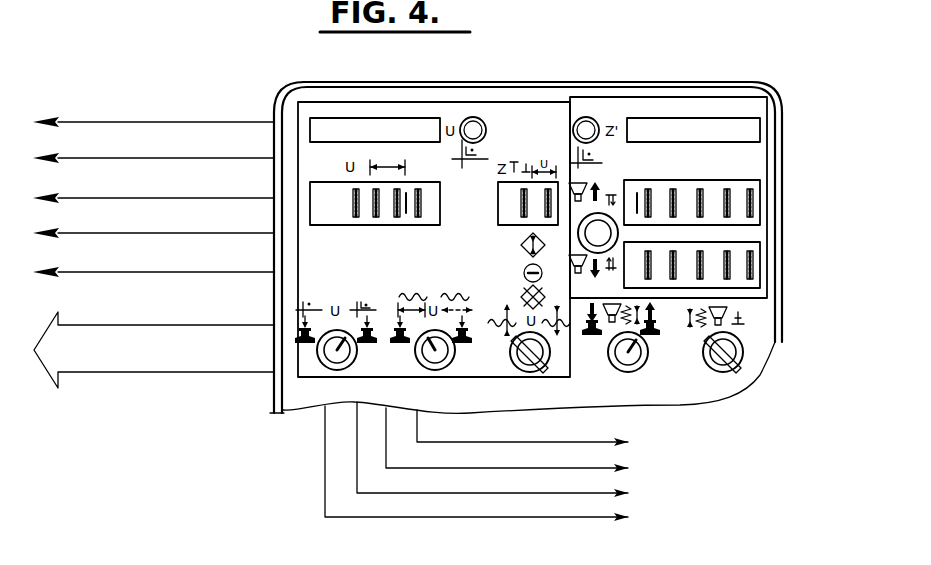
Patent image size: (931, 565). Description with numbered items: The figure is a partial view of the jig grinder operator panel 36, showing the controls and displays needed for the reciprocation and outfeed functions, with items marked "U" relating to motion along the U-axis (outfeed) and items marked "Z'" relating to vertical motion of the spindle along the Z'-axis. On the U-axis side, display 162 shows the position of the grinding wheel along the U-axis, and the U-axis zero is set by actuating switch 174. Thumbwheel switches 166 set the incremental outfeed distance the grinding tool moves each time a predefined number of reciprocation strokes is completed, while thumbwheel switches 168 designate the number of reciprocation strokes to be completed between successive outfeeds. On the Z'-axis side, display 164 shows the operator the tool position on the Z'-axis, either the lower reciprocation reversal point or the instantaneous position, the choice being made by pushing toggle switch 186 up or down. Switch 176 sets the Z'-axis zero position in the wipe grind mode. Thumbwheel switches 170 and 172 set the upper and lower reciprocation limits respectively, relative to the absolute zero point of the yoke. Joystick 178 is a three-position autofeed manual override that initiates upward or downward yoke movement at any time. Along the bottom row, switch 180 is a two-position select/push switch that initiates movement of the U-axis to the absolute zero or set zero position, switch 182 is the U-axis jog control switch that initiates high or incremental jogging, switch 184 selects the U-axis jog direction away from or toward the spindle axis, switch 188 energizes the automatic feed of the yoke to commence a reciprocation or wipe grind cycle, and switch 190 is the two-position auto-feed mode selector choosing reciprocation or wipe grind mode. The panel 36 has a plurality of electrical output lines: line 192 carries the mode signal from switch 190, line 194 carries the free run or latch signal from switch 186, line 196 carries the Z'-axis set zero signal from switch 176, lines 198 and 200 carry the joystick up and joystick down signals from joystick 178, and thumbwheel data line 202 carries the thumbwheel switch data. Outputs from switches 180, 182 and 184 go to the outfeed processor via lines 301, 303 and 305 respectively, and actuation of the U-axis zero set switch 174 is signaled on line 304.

The operator panel 36 is at (553, 97).
The display 162 is at (372, 118).
The display 164 is at (718, 118).
The outfeed thumbwheel switches 166 is at (345, 226).
The reciprocation stroke count thumbwheel switches 168 is at (498, 228).
The thumbwheel switch 170 is at (695, 184).
The thumbwheel switch 172 is at (740, 282).
The U-axis zero set switch 174 is at (478, 117).
The switch 176 is at (598, 120).
The joystick 178 is at (605, 230).
The switch 180 is at (339, 357).
The U-axis jog control switch 182 is at (433, 358).
The switch 184 is at (533, 362).
The toggle switch 186 is at (524, 275).
The switch 188 is at (622, 362).
The switch 190 is at (718, 362).
The line 192 is at (62, 116).
The line 194 is at (62, 155).
The line 196 is at (60, 196).
The line 198 is at (64, 231).
The line 200 is at (64, 269).
The thumbwheel data line 202 is at (98, 380).
The line 301 is at (496, 467).
The line 303 is at (512, 453).
The line 304 is at (542, 433).
The line 305 is at (526, 444).